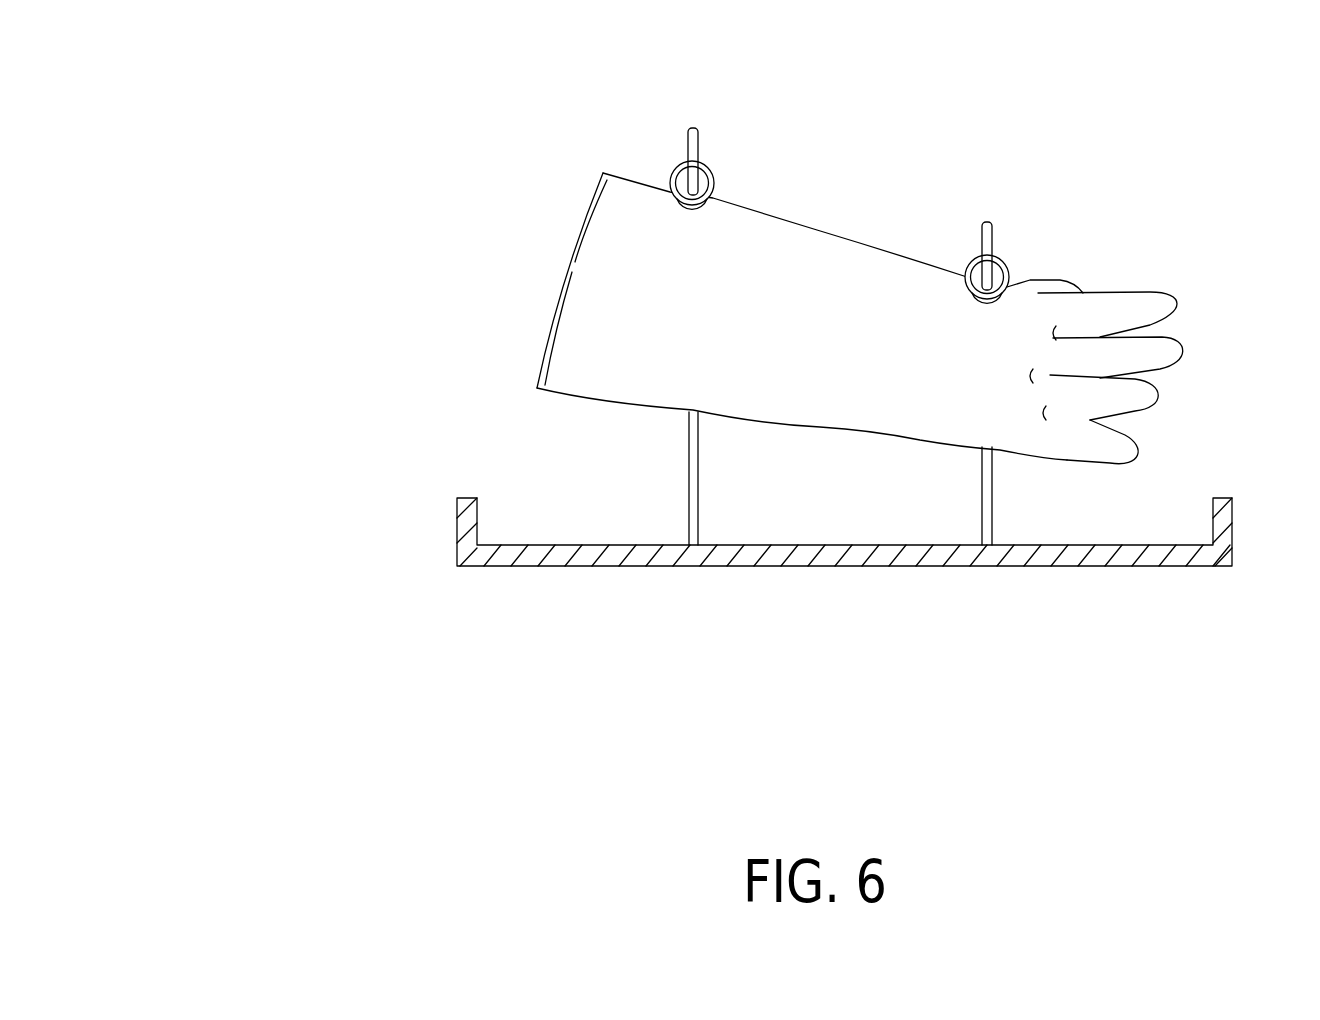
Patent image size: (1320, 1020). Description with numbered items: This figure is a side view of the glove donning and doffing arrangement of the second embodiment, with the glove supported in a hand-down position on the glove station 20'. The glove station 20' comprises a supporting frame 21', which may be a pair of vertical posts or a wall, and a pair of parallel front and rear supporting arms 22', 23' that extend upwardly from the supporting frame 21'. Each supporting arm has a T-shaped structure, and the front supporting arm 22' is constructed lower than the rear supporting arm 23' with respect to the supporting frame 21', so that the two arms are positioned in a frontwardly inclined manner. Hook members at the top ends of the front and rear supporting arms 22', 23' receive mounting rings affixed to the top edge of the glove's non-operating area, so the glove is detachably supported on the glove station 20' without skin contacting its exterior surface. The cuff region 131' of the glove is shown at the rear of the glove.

The glove station 20' is at (697, 262).
The supporting frame 21' is at (752, 442).
The front supporting arm 22' is at (1062, 496).
The rear supporting arm 23' is at (615, 478).
The glove cuff 131' is at (558, 238).